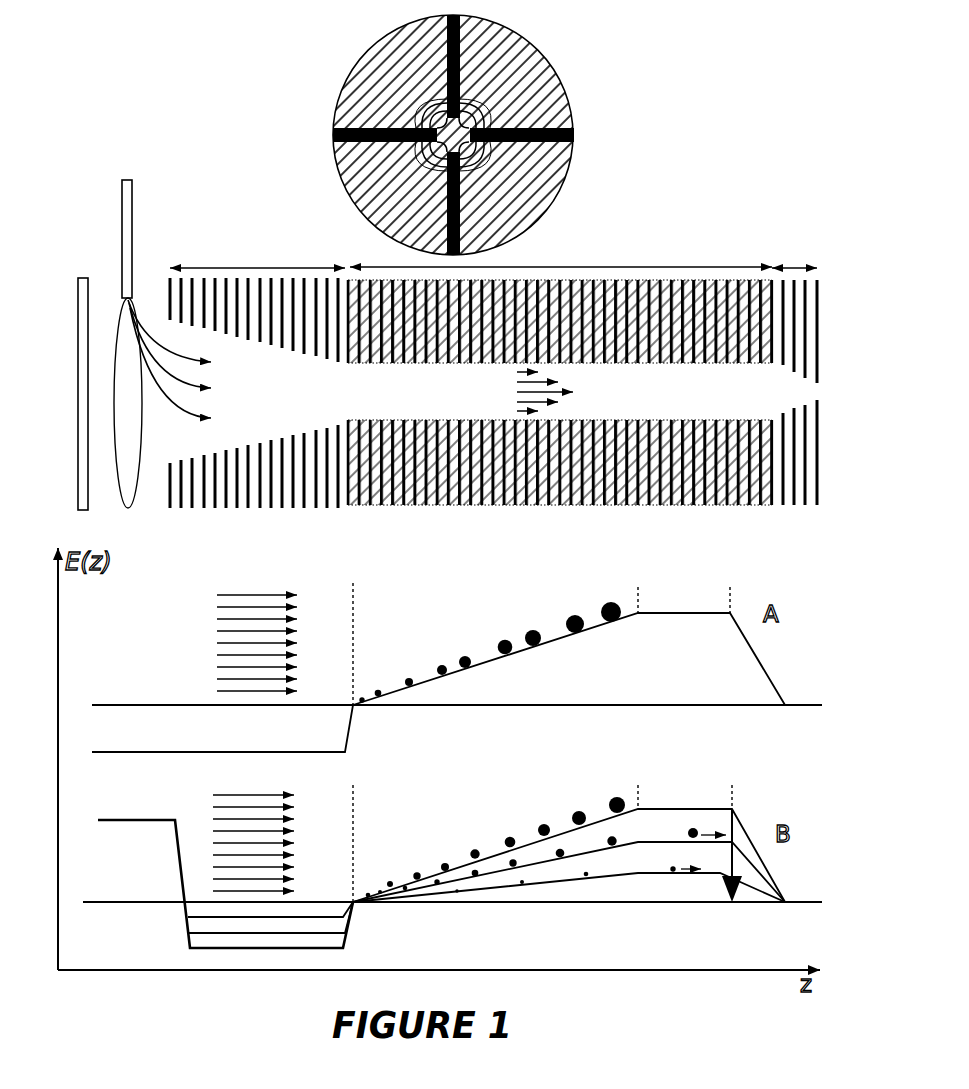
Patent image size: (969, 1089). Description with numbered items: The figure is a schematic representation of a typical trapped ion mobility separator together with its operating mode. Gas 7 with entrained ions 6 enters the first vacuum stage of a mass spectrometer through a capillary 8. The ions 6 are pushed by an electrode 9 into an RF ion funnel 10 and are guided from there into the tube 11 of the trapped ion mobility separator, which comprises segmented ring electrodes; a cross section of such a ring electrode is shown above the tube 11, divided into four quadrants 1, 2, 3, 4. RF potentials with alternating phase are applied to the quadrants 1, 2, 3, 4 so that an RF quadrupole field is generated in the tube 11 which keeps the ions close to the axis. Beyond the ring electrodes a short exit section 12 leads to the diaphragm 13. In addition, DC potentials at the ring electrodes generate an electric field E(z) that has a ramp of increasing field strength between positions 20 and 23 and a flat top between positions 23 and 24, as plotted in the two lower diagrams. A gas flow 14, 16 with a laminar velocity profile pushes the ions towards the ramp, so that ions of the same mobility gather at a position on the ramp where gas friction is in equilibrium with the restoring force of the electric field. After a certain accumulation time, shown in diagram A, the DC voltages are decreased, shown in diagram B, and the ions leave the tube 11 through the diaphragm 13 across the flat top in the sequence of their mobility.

The quadrant of the ring electrodes 1 is at (393, 75).
The quadrant of the ring electrodes 2 is at (513, 75).
The quadrant of the ring electrodes 3 is at (393, 195).
The quadrant of the ring electrodes 4 is at (513, 195).
The ions 6 is at (169, 359).
The gas 7 is at (128, 403).
The capillary 8 is at (139, 239).
The electrode 9 is at (84, 380).
The RF ion funnel 10 is at (257, 375).
The tube of the trapped ion mobility separator 11 is at (515, 237).
The exit lens section 12 is at (794, 364).
The diaphragm 13 is at (817, 277).
The gas flow 14 is at (529, 391).
The gas flow 16 is at (255, 743).
The position at start of the ramp 20 is at (357, 728).
The position at end of the ramp 23 is at (642, 683).
The position at end of the flat top 24 is at (734, 731).